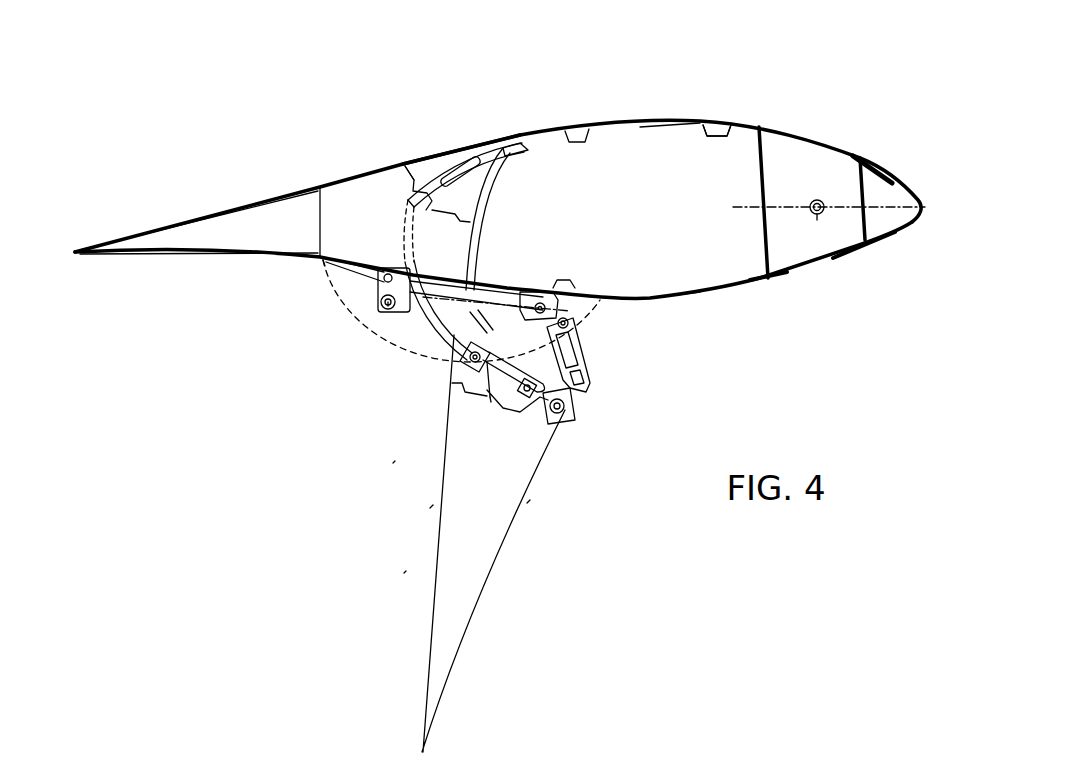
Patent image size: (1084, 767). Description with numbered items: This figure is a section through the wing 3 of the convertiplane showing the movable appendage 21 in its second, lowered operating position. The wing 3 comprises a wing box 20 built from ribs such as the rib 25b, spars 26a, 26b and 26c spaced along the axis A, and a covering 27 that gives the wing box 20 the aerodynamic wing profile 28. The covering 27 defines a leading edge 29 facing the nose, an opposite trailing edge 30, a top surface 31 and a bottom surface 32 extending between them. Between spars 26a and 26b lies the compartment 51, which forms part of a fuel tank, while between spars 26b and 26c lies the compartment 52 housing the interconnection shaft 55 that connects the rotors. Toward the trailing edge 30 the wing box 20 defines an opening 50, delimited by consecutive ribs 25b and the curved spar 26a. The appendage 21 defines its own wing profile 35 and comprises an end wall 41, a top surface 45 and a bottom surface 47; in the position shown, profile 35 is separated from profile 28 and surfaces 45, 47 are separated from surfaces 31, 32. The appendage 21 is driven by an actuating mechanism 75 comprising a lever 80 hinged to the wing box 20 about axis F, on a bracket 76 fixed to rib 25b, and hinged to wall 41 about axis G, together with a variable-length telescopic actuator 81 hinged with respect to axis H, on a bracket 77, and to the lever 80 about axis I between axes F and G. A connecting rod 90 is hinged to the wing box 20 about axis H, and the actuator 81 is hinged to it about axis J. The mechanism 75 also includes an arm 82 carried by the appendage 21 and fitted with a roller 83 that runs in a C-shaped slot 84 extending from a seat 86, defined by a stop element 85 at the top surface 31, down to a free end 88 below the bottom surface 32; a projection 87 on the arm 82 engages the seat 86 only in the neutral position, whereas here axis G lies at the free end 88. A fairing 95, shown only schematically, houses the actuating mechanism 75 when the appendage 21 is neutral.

The wing 3 is at (659, 96).
The wing box 20 is at (836, 117).
The movable appendage 21 is at (452, 593).
The rib 25b is at (268, 220).
The spar 26a is at (487, 140).
The spar 26b is at (761, 112).
The spar 26c is at (855, 228).
The covering 27 is at (680, 123).
The wing profile 28 is at (890, 130).
The leading edge 29 is at (919, 214).
The trailing edge 30 is at (77, 247).
The top surface 31 is at (719, 116).
The bottom surface 32 is at (681, 311).
The wing profile 35 is at (403, 574).
The end wall 41 is at (523, 418).
The top surface 45 is at (429, 508).
The bottom surface 47 is at (528, 504).
The opening 50 is at (380, 179).
The compartment 51 is at (658, 132).
The compartment 52 is at (802, 198).
The interconnection shaft 55 is at (814, 222).
The actuating mechanism 75 is at (392, 464).
The bracket 76 is at (553, 293).
The bracket 77 is at (361, 276).
The lever 80 is at (588, 365).
The variable-length telescopic actuator 81 is at (415, 318).
The arm 82 is at (490, 398).
The roller 83 is at (460, 360).
The slot 84 is at (455, 179).
The stop element 85 is at (485, 170).
The seat 86 is at (484, 207).
The projection 87 is at (483, 331).
The free end 88 is at (466, 392).
The connecting rod 90 is at (378, 286).
The fairing 95 is at (347, 333).
The axis A is at (890, 210).
The axis F is at (555, 292).
The axis G is at (570, 417).
The axis H is at (388, 276).
The axis I is at (570, 323).
The axis J is at (388, 282).